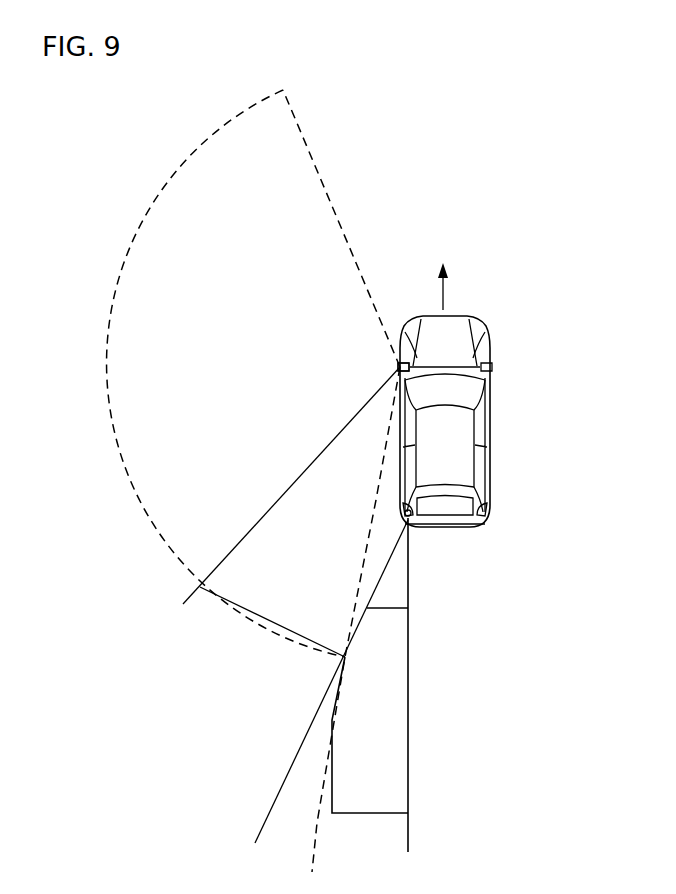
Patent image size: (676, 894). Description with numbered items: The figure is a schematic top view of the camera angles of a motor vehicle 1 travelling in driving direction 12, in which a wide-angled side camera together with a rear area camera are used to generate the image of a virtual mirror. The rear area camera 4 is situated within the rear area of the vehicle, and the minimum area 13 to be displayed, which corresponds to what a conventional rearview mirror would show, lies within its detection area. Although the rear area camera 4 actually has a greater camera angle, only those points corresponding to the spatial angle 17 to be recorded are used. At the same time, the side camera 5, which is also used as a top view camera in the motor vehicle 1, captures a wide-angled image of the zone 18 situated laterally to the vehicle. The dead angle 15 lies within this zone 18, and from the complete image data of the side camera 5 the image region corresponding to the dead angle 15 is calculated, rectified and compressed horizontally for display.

The motor vehicle 1 is at (499, 463).
The rear area camera 4 is at (410, 518).
The side camera 5 is at (400, 361).
The driving direction 12 is at (445, 290).
The minimum area to be displayed 13 is at (395, 712).
The dead angle 15 is at (278, 563).
The spatial angle to be recorded 17 is at (393, 579).
The zone situated laterally to the motor vehicle 18 is at (133, 571).